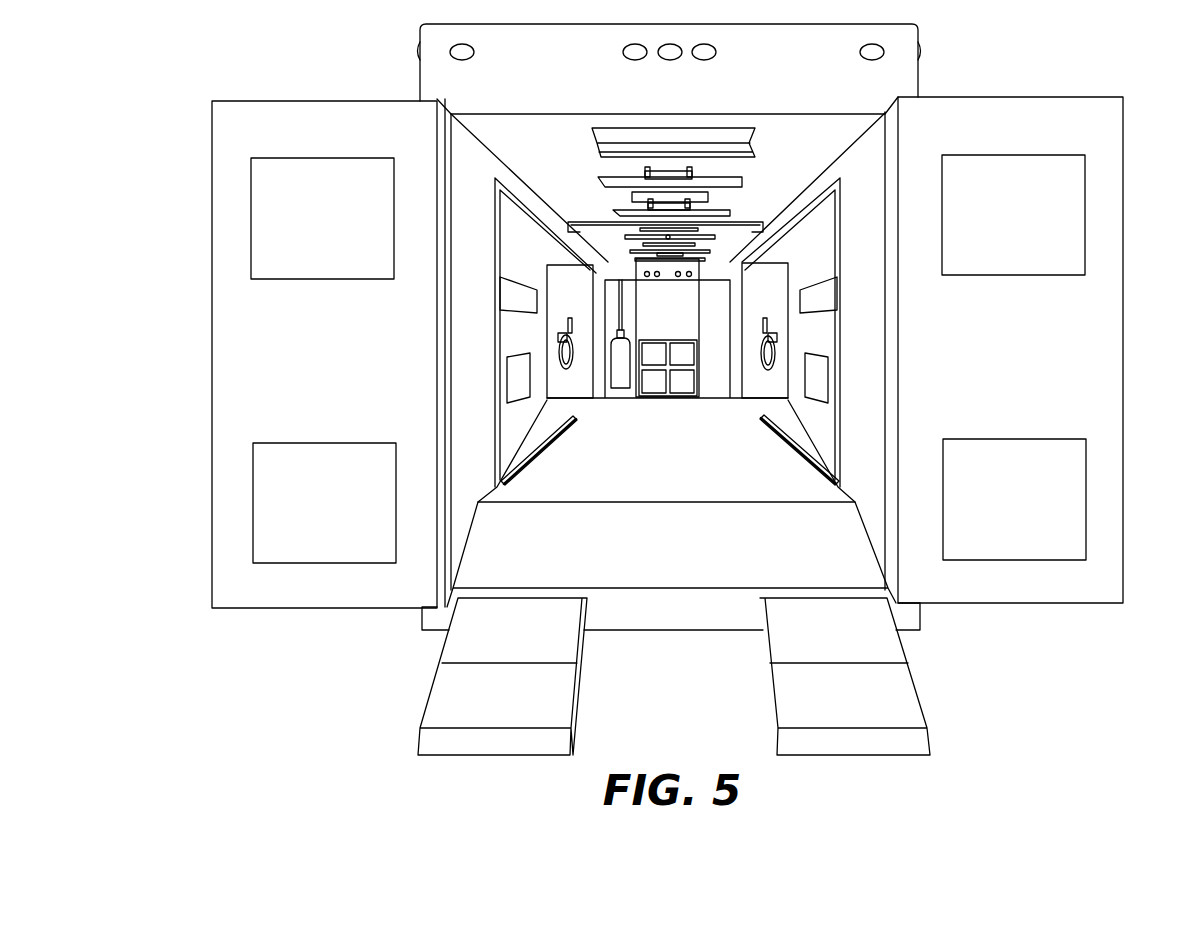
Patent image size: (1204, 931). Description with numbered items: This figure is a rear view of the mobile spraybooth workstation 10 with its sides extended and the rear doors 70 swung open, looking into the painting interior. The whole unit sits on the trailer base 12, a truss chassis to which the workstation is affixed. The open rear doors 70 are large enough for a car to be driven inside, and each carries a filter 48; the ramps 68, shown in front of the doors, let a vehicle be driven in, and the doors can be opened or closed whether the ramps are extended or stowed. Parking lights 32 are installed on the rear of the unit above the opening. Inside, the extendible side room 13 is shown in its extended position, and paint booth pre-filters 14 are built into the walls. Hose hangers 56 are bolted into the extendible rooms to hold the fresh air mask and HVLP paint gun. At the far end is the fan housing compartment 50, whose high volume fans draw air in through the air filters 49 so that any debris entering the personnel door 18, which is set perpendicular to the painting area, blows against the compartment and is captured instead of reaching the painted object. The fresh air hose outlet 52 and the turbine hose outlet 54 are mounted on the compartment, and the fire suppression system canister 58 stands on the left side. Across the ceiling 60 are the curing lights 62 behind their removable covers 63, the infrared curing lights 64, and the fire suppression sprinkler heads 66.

The mobile spraybooth workstation 10 is at (920, 82).
The trailer base 12 is at (922, 625).
The side room 13 is at (508, 263).
The paint booth pre-filters 14 is at (810, 388).
The door 18 is at (735, 380).
The parking lights 32 is at (671, 58).
The filters 48 is at (255, 222).
The air filters 49 is at (683, 383).
The fan housing compartment 50 is at (628, 338).
The fresh air hose outlet 52 is at (700, 282).
The turbine hose outlet 54 is at (641, 274).
The hose hangers 56 is at (570, 368).
The fire suppression system canister 58 is at (619, 378).
The ceiling 60 is at (842, 128).
The curing lights 62 is at (675, 189).
The removable covers 63 is at (752, 147).
The infrared curing lights 64 is at (707, 197).
The fire suppression sprinkler heads 66 is at (692, 175).
The ramps 68 is at (908, 700).
The rear doors 70 is at (256, 376).